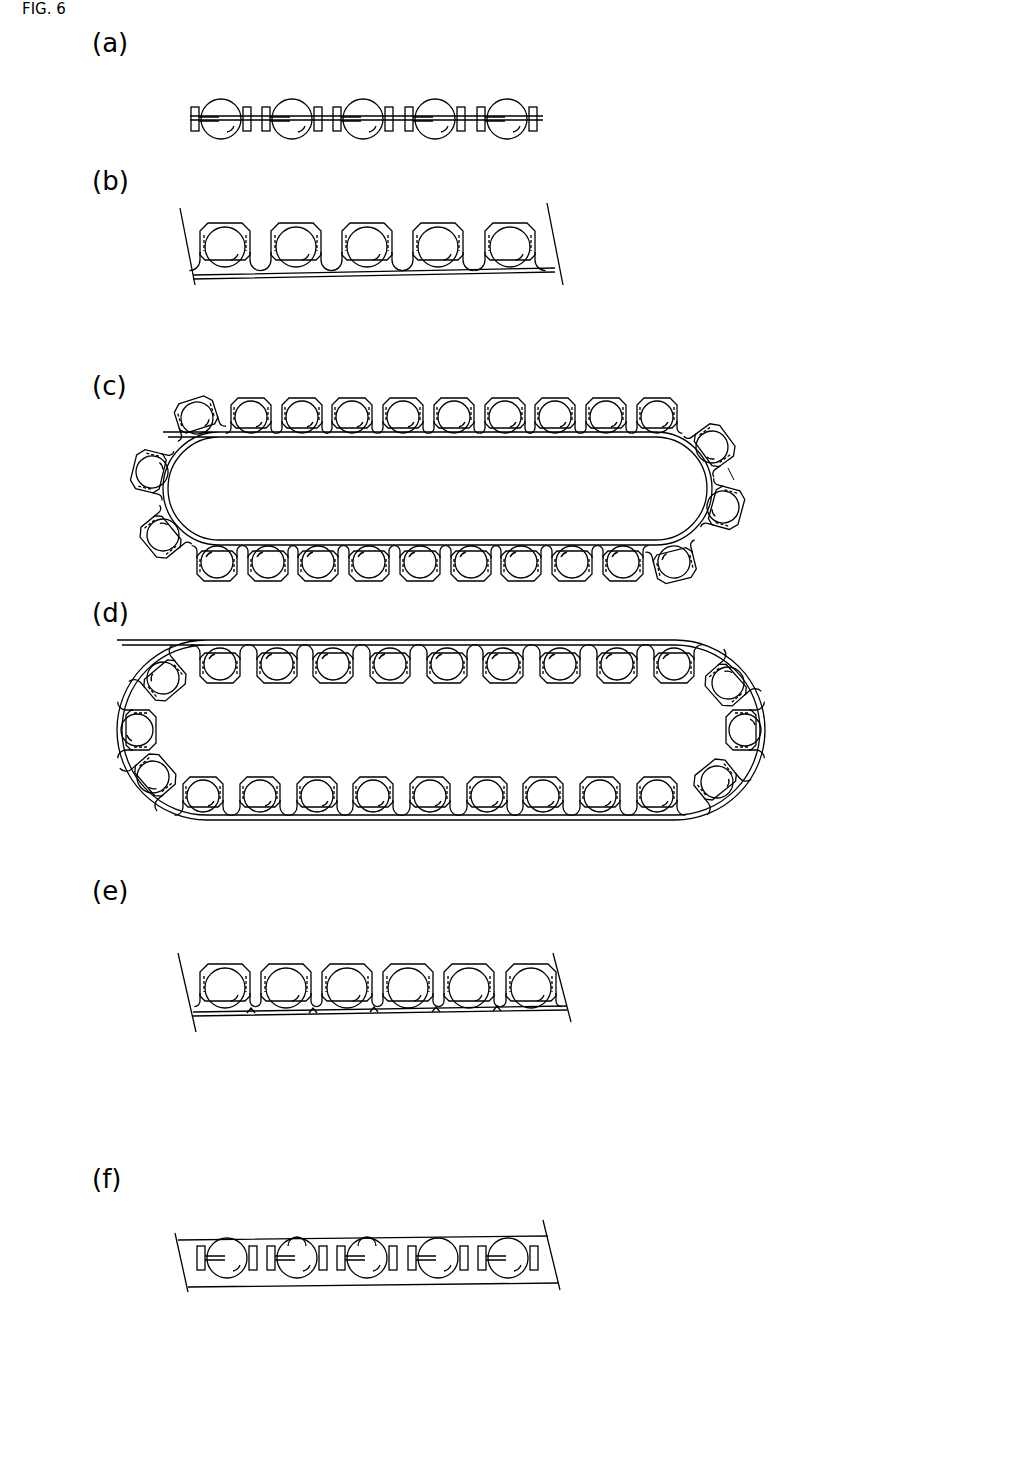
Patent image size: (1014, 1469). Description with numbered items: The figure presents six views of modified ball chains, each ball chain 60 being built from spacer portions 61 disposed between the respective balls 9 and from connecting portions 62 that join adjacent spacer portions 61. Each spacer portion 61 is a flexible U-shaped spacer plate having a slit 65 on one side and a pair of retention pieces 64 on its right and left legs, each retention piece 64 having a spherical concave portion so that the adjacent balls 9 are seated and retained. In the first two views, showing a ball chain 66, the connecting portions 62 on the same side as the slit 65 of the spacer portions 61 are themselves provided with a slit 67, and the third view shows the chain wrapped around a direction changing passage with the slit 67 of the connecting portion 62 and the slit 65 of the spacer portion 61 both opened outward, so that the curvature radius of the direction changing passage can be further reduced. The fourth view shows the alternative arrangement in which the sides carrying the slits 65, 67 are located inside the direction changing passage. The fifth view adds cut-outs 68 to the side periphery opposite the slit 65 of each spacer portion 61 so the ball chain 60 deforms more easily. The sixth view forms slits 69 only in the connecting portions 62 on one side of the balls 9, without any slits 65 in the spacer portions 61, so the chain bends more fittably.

The ball 9 is at (216, 112).
The ball chain 60 is at (768, 644).
The spacer portion 61 is at (258, 283).
The connecting portion 62 is at (362, 280).
The retention piece 64 is at (200, 108).
The slit 65 is at (732, 477).
The ball chain 66 is at (567, 82).
The slit 67 is at (232, 118).
The cut-out 68 is at (255, 1017).
The slit 69 is at (297, 1240).